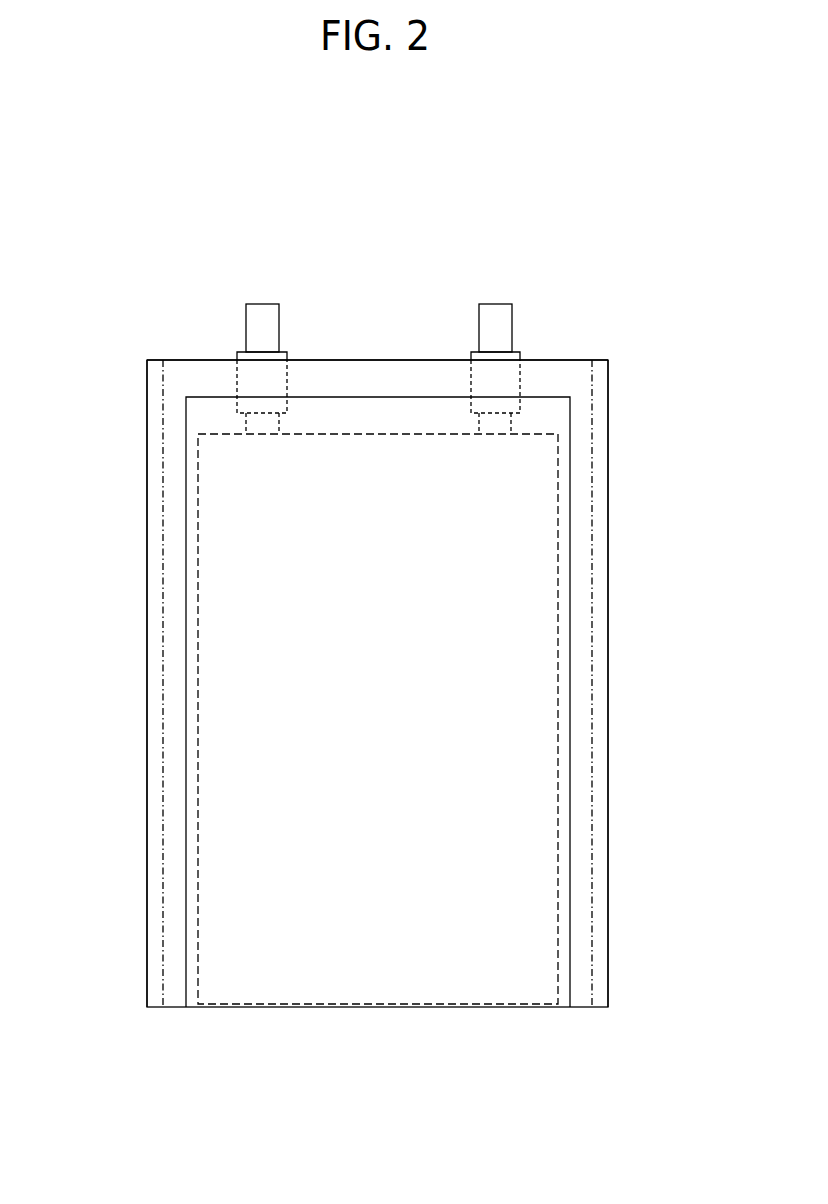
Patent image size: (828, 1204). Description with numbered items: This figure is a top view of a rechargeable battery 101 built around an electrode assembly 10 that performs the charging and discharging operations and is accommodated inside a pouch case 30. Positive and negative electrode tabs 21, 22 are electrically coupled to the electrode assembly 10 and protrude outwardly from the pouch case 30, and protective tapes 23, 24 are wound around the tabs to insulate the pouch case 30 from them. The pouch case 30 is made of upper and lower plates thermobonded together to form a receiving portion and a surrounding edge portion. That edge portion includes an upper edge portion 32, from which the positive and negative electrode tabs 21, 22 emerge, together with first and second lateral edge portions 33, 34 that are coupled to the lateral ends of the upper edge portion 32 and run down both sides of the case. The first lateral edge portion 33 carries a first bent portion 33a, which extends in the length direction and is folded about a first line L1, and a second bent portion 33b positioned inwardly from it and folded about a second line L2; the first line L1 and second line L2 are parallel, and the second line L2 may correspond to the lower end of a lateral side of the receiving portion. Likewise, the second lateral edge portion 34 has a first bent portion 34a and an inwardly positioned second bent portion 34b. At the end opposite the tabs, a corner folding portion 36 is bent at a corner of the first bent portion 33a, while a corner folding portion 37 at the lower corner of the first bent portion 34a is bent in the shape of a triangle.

The rechargeable battery 101 is at (186, 230).
The electrode assembly 10 is at (558, 641).
The positive electrode tab 21 is at (262, 312).
The negative electrode tab 22 is at (495, 312).
The protective tape 23 is at (240, 350).
The protective tape 24 is at (520, 351).
The pouch case 30 is at (600, 423).
The upper edge portion 32 is at (361, 372).
The first lateral edge portion 33 is at (155, 564).
The second lateral edge portion 34 is at (609, 495).
The first line L1 is at (163, 650).
The second line L2 is at (186, 722).
The first bent portion 33a is at (155, 831).
The second bent portion 33b is at (175, 895).
The first bent portion 34a is at (602, 762).
The second bent portion 34b is at (582, 825).
The corner folding portion 36 is at (147, 1005).
The corner folding portion 37 is at (608, 1005).